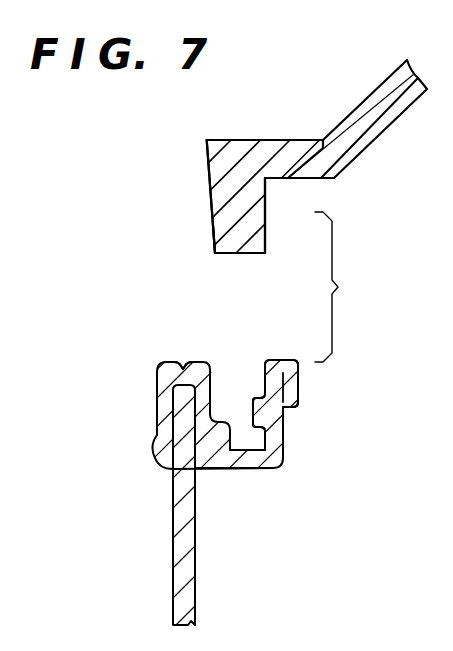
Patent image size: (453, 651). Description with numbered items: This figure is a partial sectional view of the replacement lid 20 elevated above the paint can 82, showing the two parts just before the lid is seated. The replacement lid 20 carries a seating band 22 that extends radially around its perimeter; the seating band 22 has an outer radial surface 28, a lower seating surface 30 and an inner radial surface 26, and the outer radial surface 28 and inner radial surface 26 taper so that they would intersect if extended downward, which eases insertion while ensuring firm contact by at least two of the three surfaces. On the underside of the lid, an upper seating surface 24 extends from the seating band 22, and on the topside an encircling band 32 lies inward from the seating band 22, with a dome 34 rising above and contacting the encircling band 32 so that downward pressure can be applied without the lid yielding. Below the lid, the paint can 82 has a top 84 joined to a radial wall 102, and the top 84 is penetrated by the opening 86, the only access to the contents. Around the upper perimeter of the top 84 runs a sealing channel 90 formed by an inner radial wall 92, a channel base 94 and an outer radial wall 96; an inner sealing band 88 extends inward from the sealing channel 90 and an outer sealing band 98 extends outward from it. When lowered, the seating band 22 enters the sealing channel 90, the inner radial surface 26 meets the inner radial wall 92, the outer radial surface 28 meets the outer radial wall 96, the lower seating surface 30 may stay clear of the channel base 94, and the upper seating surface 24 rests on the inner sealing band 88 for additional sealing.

The replacement lid 20 is at (207, 149).
The seating band 22 is at (209, 199).
The upper seating surface 24 is at (298, 180).
The inner radial surface 26 is at (266, 229).
The outer radial surface 28 is at (213, 241).
The lower seating surface 30 is at (227, 256).
The encircling band 32 is at (303, 139).
The dome 34 is at (381, 84).
The paint can 82 is at (172, 583).
The top 84 is at (157, 409).
The opening 86 is at (318, 382).
The inner sealing band 88 is at (272, 360).
The sealing channel 90 is at (222, 383).
The inner radial wall 92 is at (254, 426).
The channel base 94 is at (253, 473).
The outer radial wall 96 is at (253, 474).
The outer sealing band 98 is at (183, 367).
The radial wall 102 is at (172, 522).